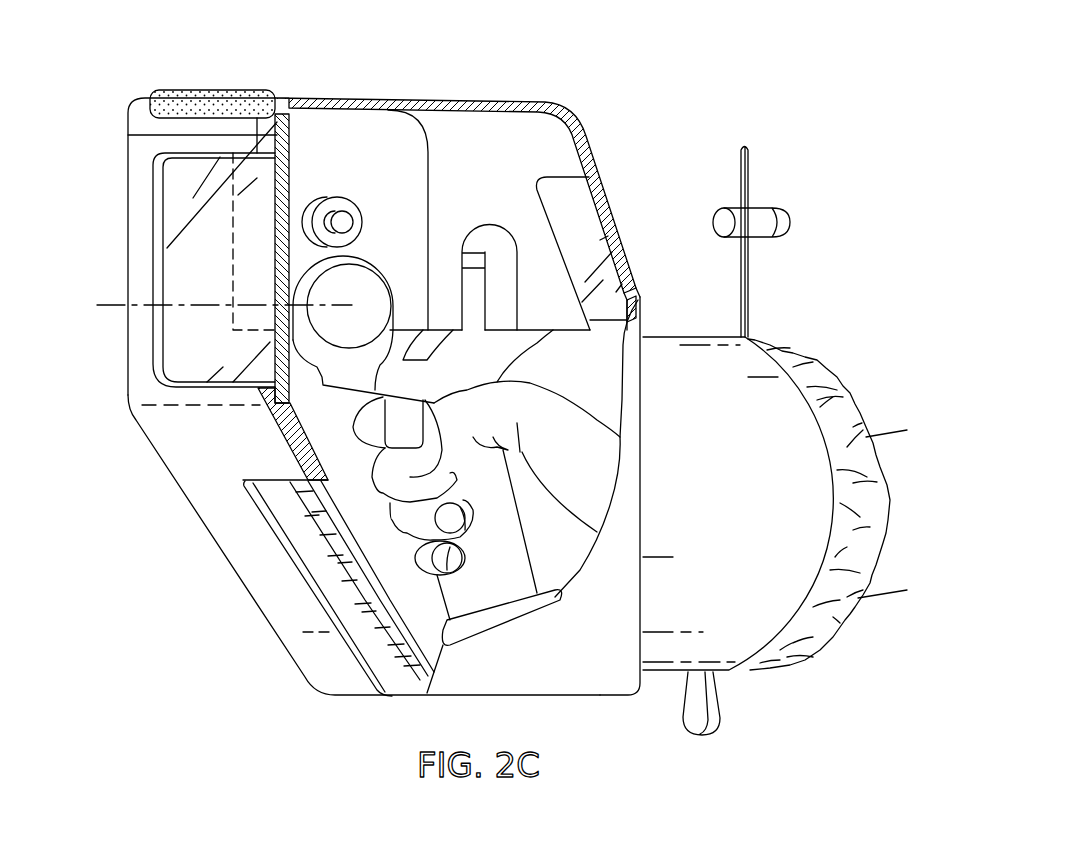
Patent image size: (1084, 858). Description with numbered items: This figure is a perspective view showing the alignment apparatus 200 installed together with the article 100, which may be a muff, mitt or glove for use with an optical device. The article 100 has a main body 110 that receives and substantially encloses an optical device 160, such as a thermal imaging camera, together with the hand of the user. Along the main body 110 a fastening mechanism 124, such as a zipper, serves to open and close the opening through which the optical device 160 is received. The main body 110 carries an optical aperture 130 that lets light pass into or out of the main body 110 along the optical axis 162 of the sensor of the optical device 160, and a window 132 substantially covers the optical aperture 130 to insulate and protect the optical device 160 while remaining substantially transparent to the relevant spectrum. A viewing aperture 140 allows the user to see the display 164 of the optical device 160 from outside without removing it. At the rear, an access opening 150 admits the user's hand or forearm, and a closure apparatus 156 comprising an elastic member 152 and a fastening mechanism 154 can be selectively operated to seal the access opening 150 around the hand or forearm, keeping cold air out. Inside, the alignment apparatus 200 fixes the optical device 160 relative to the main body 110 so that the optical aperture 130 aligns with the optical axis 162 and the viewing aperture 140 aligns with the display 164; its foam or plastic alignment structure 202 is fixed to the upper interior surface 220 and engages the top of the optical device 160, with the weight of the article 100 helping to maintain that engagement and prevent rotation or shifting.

The article 100 is at (222, 48).
The main body 110 is at (250, 548).
The fastening mechanism 124 is at (697, 715).
The optical aperture 130 is at (105, 184).
The window 132 is at (192, 342).
The viewing aperture 140 is at (641, 174).
The access opening 150 is at (867, 398).
The elastic member 152 is at (750, 165).
The fastening mechanism 154 is at (758, 228).
The closure apparatus 156 is at (835, 672).
The optical device 160 is at (503, 590).
The optical axis 162 is at (113, 305).
The display 164 is at (571, 218).
The alignment apparatus 200 is at (309, 150).
The alignment structure 202 is at (352, 136).
The upper interior surface 220 is at (456, 99).